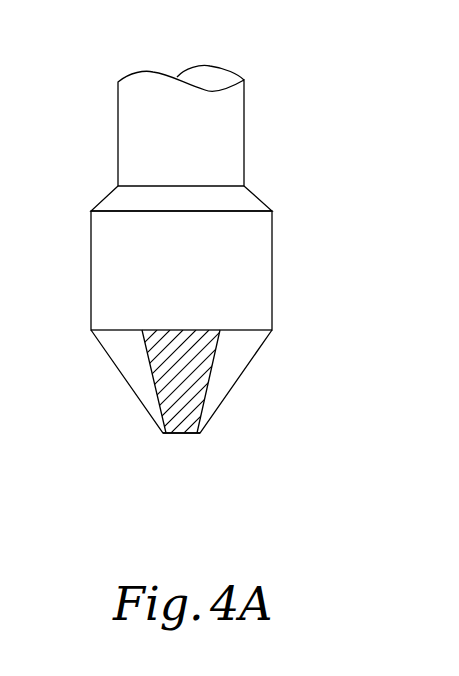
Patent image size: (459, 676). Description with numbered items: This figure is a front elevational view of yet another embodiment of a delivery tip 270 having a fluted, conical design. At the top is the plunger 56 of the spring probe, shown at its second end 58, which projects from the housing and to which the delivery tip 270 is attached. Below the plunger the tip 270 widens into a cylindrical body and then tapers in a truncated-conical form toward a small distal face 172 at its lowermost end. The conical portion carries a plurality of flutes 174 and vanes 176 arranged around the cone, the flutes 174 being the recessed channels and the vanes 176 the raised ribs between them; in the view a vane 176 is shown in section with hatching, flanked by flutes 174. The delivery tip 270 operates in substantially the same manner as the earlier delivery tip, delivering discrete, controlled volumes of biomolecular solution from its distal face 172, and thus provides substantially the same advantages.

The plunger 56 is at (205, 76).
The second end 58 is at (232, 125).
The delivery tip 270 is at (225, 252).
The distal face 172 is at (168, 435).
The flutes 174 is at (230, 360).
The vanes 176 is at (168, 378).